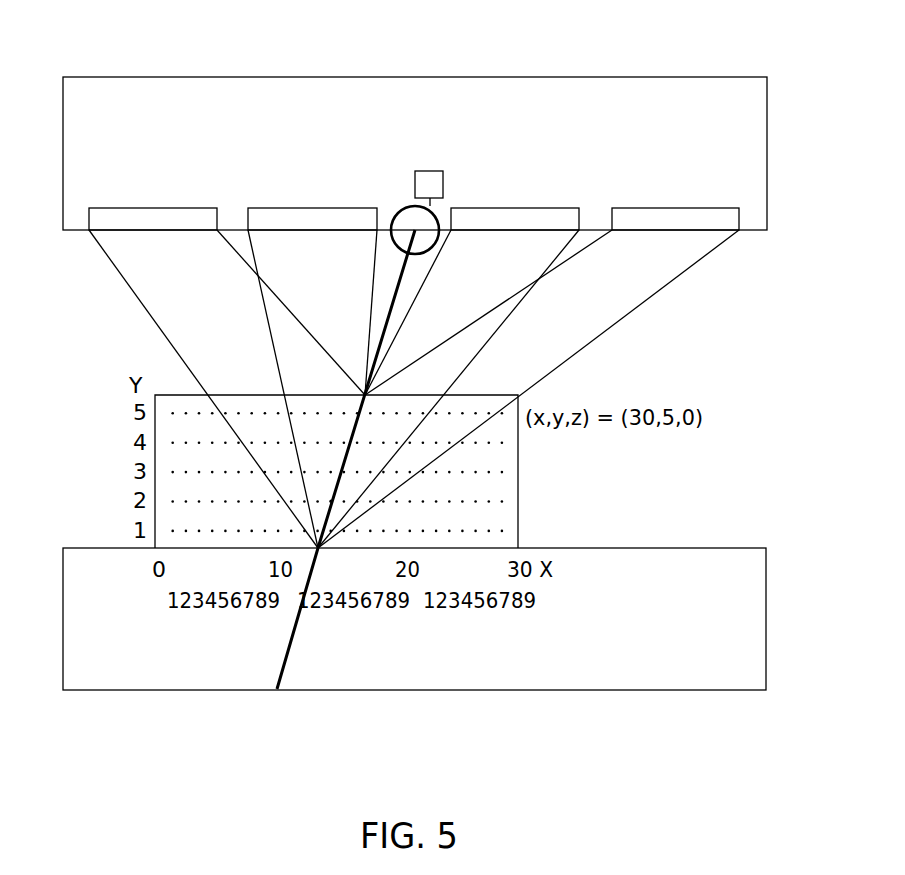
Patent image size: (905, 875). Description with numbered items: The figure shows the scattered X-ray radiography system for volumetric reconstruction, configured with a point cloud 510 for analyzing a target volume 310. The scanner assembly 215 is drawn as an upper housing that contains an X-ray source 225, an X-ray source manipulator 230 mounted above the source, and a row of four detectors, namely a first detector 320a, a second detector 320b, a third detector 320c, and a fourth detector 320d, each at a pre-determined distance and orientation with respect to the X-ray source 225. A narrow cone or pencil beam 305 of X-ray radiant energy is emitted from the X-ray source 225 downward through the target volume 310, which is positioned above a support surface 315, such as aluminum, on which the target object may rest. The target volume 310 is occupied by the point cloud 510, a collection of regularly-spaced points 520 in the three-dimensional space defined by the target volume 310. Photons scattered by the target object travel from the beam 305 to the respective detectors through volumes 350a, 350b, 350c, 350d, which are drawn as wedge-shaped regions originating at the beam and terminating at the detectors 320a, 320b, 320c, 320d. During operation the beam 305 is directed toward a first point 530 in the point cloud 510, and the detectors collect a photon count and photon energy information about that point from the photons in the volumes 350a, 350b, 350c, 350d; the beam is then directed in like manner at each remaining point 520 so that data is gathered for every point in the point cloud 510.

The scanner assembly 215 is at (500, 77).
The X-ray source 225 is at (402, 207).
The X-ray source manipulator 230 is at (430, 171).
The beam 305 is at (395, 300).
The target volume 310 is at (520, 485).
The support surface 315 is at (703, 547).
The first detector 320a is at (153, 208).
The second detector 320b is at (313, 208).
The third detector 320c is at (515, 208).
The fourth detector 320d is at (676, 209).
The volume 350a is at (138, 298).
The volume 350b is at (270, 333).
The volume 350c is at (523, 298).
The volume 350d is at (577, 353).
The point cloud 510 is at (498, 457).
The points 520 is at (488, 530).
The first point 530 is at (333, 502).